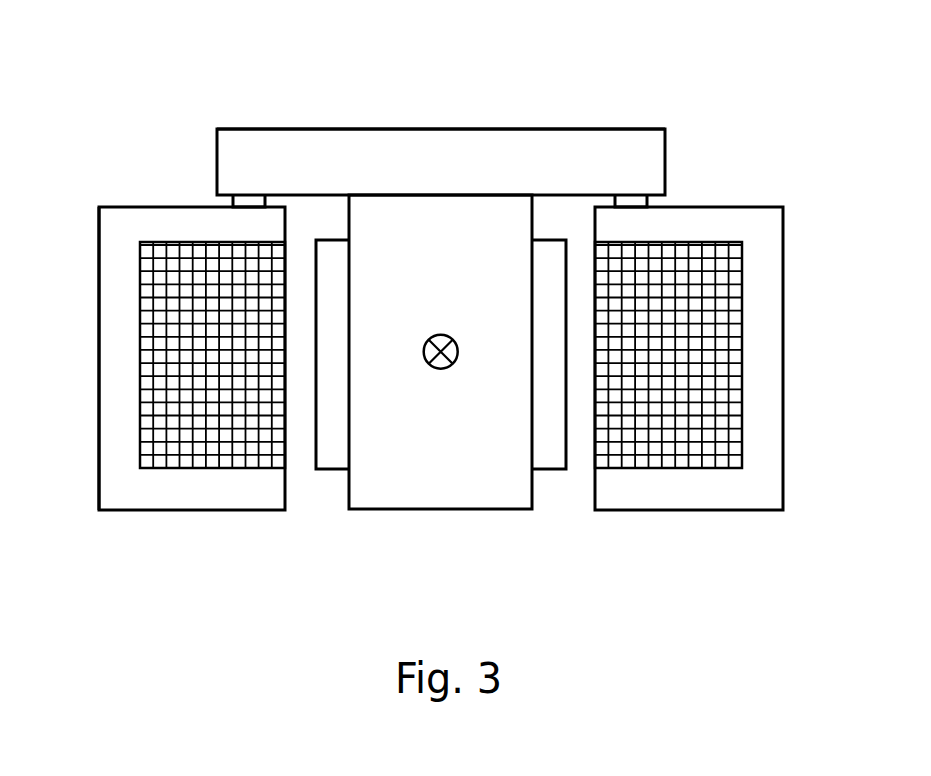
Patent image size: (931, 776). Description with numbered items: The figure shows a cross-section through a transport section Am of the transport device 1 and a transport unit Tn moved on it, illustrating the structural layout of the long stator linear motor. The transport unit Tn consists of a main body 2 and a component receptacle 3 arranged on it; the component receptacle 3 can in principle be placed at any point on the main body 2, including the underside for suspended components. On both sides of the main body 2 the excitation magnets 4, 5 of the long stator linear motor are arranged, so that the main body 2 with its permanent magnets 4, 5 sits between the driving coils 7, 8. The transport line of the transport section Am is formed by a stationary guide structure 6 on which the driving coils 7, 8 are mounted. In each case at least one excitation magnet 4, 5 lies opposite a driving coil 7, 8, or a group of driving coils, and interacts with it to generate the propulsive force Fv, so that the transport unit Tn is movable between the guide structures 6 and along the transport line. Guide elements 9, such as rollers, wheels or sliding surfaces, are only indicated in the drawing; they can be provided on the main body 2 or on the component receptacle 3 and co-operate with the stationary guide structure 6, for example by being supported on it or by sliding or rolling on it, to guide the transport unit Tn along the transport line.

The transport device 1 is at (750, 139).
The main body 2 is at (442, 453).
The component receptacle 3 is at (502, 162).
The excitation magnet 4 is at (340, 433).
The excitation magnet 5 is at (552, 441).
The guide structure 6 is at (120, 462).
The driving coil 7 is at (187, 422).
The driving coil 8 is at (647, 428).
The guide element 9 is at (249, 193).
The transport unit Tn is at (385, 162).
The transport section Am is at (123, 170).
The propulsive force Fv is at (452, 337).